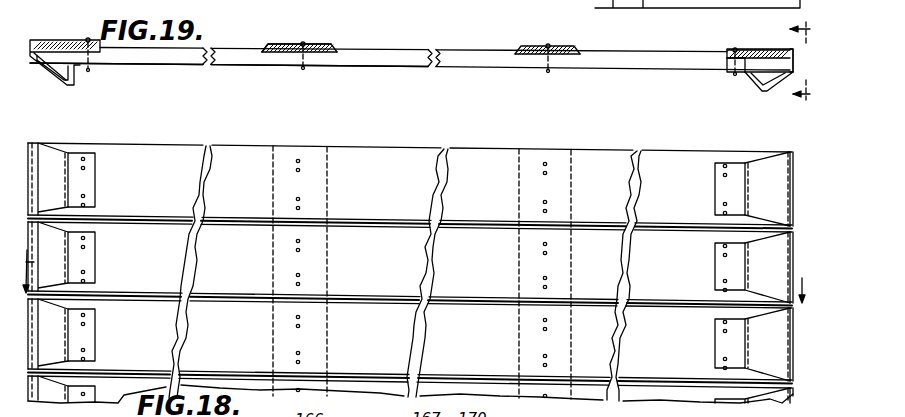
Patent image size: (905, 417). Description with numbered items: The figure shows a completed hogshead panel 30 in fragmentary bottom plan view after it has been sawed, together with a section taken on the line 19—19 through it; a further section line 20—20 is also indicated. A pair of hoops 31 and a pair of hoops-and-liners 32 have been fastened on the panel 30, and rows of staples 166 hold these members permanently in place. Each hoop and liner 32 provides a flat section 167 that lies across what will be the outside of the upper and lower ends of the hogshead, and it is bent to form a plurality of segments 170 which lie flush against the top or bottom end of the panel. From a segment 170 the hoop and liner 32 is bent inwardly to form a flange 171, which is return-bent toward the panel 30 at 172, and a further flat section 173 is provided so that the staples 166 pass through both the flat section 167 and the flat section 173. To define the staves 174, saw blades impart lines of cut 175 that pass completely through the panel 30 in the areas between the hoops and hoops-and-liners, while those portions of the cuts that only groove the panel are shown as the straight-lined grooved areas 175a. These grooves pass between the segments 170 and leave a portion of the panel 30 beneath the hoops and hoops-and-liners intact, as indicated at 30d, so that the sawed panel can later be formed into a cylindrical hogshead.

In FIG. 19, the panel 30 is at (400, 48).
In FIG. 19, the intact panel portion 30d is at (335, 63).
In FIG. 19, the hoop 31 is at (322, 44).
In FIG. 18, the hoop 31 is at (573, 160).
In FIG. 19, the hoop and liner 32 is at (47, 40).
In FIG. 19, the staples 166 is at (301, 42).
In FIG. 18, the staples 166 is at (542, 158).
In FIG. 19, the flat section 167 is at (757, 50).
In FIG. 19, the segments 170 is at (796, 60).
In FIG. 19, the flange 171 is at (775, 86).
In FIG. 18, the flange 171 is at (763, 170).
In FIG. 19, the return bend 172 is at (750, 76).
In FIG. 19, the flat section 173 is at (740, 74).
In FIG. 18, the flat section 173 is at (723, 194).
In FIG. 18, the staves 174 is at (193, 132).
In FIG. 19, the lines of cut 175 is at (185, 60).
In FIG. 18, the lines of cut 175 is at (178, 216).
In FIG. 19, the grooved areas 175a is at (74, 68).
In FIG. 18, the grooved areas 175a is at (100, 226).
In FIG. 18, the section line 19— 19 is at (419, 276).
In FIG. 19, the section line 20— 20 is at (787, 63).